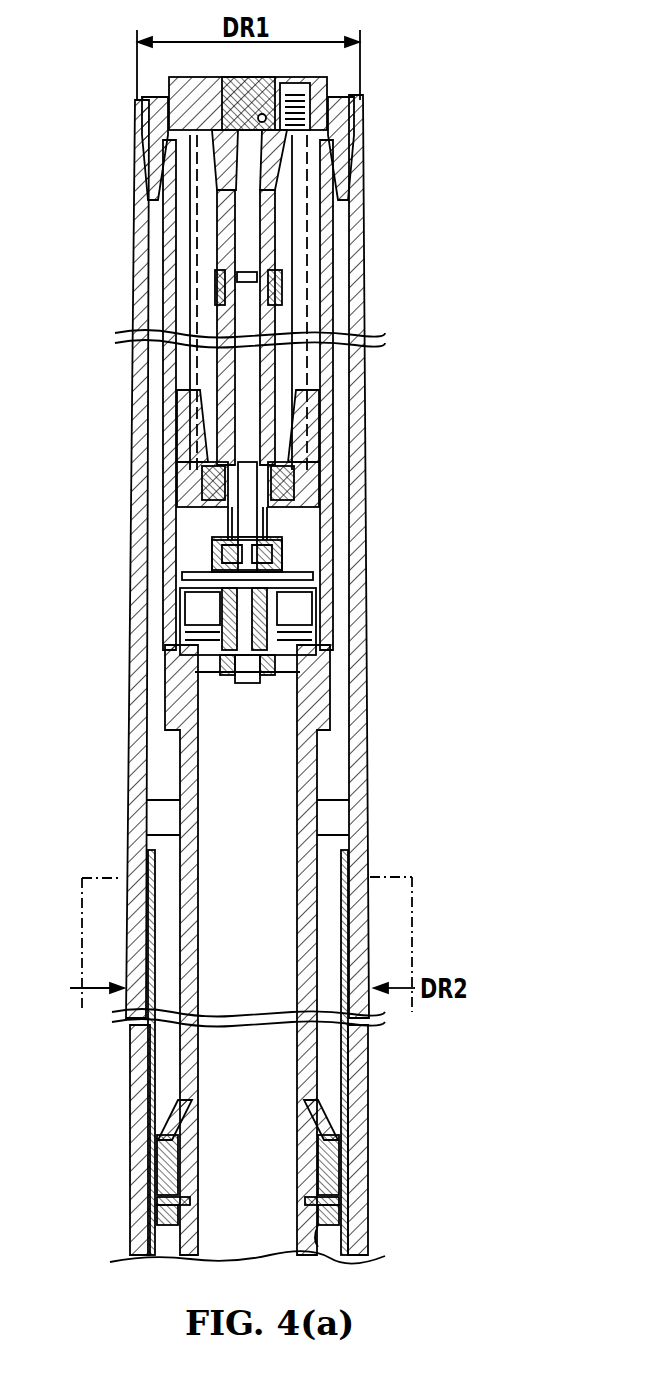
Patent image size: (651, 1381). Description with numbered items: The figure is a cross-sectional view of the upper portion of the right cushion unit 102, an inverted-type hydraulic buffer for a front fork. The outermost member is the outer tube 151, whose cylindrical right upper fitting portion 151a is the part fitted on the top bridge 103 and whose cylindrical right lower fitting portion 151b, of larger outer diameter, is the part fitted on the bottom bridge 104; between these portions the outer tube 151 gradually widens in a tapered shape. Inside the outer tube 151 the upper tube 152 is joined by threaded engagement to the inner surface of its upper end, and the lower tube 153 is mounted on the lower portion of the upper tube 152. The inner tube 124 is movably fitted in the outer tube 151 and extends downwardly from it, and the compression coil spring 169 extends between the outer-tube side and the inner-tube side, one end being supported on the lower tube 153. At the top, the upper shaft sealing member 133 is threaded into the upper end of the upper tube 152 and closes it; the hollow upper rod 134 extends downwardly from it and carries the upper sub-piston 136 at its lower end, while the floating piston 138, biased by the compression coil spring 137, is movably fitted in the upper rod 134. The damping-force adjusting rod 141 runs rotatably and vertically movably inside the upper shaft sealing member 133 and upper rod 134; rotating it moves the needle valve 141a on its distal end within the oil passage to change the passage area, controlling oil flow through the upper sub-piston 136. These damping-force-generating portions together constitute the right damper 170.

The right cushion unit 102 is at (80, 92).
The top bridge 103 is at (130, 262).
The outer tube 151 is at (135, 315).
The upper shaft sealing member 133 is at (334, 78).
The right upper fitting portion 151a is at (363, 260).
The damping-force adjusting rod 141 is at (250, 220).
The upper tube 152 is at (335, 320).
The upper rod 134 is at (276, 362).
The compression coil spring 137 is at (312, 418).
The floating piston 138 is at (318, 487).
The needle valve 141a is at (304, 522).
The upper sub-piston 136 is at (298, 560).
The right damper 170 is at (200, 548).
The bottom bridge 104 is at (82, 878).
The right lower fitting portion 151b is at (372, 910).
The inner tube 124 is at (150, 1080).
The lower tube 153 is at (150, 1243).
The compression coil spring 169 is at (345, 1240).